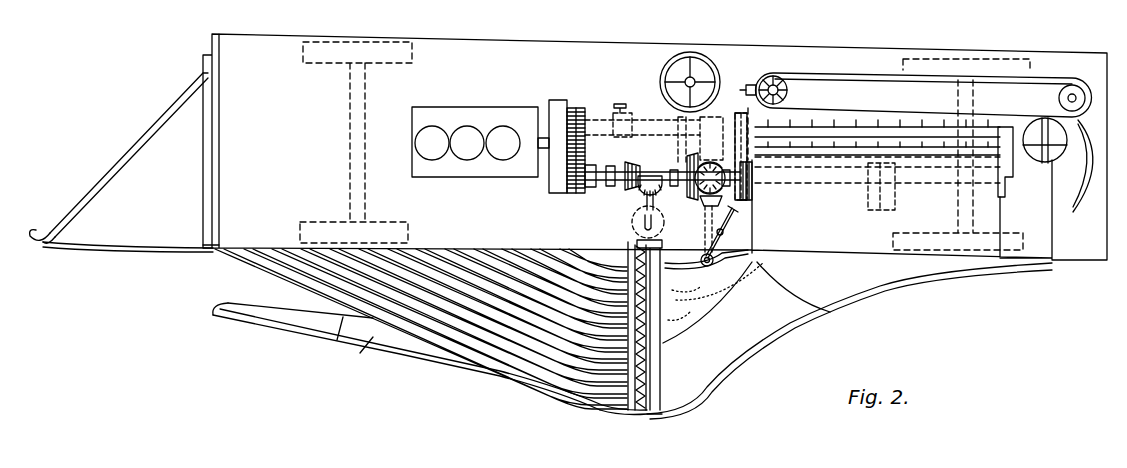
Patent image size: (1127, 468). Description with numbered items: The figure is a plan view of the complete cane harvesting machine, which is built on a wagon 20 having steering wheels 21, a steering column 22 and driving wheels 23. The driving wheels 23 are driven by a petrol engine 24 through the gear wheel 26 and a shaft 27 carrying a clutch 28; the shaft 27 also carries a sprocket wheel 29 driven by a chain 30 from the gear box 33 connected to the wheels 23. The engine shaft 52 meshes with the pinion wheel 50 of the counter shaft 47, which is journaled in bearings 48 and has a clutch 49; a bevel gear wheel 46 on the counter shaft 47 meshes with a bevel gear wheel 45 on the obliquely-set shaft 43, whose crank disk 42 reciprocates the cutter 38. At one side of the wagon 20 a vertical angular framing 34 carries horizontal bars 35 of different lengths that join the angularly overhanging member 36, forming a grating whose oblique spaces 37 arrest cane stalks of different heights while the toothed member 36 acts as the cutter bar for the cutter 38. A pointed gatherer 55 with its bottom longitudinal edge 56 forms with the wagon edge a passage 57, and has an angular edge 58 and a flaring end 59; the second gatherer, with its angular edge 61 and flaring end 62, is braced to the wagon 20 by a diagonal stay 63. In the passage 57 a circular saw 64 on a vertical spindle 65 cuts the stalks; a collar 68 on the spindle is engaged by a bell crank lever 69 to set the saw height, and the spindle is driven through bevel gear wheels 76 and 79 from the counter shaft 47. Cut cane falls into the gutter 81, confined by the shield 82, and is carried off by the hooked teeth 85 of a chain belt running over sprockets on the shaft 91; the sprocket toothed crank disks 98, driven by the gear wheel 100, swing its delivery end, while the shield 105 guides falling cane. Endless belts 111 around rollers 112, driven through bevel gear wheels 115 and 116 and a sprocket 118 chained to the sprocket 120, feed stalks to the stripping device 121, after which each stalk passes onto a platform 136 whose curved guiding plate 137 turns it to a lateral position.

The wagon 20 is at (655, 147).
The steering wheels 21 is at (400, 48).
The steering column 22 is at (700, 54).
The driving wheels 23 is at (1016, 245).
The petrol engine 24 is at (475, 142).
The gear wheel 26 is at (575, 106).
The shaft 27 is at (637, 125).
The clutch 28 is at (620, 103).
The sprocket wheel 29 is at (676, 120).
The chain 30 is at (685, 165).
The gear box 33 is at (742, 112).
The vertical angular framing 34 is at (222, 246).
The horizontal bars 35 is at (478, 252).
The angularly overhanging member 36 is at (661, 386).
The spaces 37 is at (506, 352).
The cutter 38 is at (652, 416).
The crank disk 42 is at (632, 225).
The obliquely-set shaft 43 is at (644, 210).
The bevel gear wheel 45 is at (658, 192).
The bevel gear wheel 46 is at (632, 164).
The counter shaft 47 is at (590, 188).
The bearings 48 is at (694, 203).
The clutch 49 is at (610, 187).
The pinion wheel 50 is at (558, 180).
The engine shaft 52 is at (545, 137).
The pointed gatherer 55 is at (360, 354).
The bottom longitudinal edge 56 is at (327, 336).
The passage 57 is at (300, 300).
The angular edge 58 is at (434, 368).
The flaring end 59 is at (224, 313).
The angular edge 61 is at (107, 250).
The flaring end 62 is at (37, 243).
The diagonal stay 63 is at (98, 182).
The circular saw 64 is at (723, 236).
The vertical spindle 65 is at (726, 249).
The collar 68 is at (700, 260).
The bell crank lever 69 is at (738, 212).
The bevel gear wheel 76 is at (753, 192).
The bevel gear wheel 79 is at (716, 165).
The gutter 81 is at (812, 316).
The shield 82 is at (678, 273).
The teeth 85 is at (886, 124).
The shaft 91 is at (715, 132).
The sprocket toothed crank disks 98 is at (1010, 182).
The gear wheel 100 is at (895, 201).
The shield 105 is at (880, 220).
The endless belts 111 is at (883, 76).
The rollers 112 is at (1078, 87).
The bevel gear wheel 115 is at (786, 87).
The bevel gear wheel 116 is at (776, 77).
The sprocket 118 is at (752, 83).
The sprocket 120 is at (790, 169).
The stripping device 121 is at (1039, 124).
The platform 136 is at (1091, 182).
The curved guiding plate 137 is at (1094, 160).